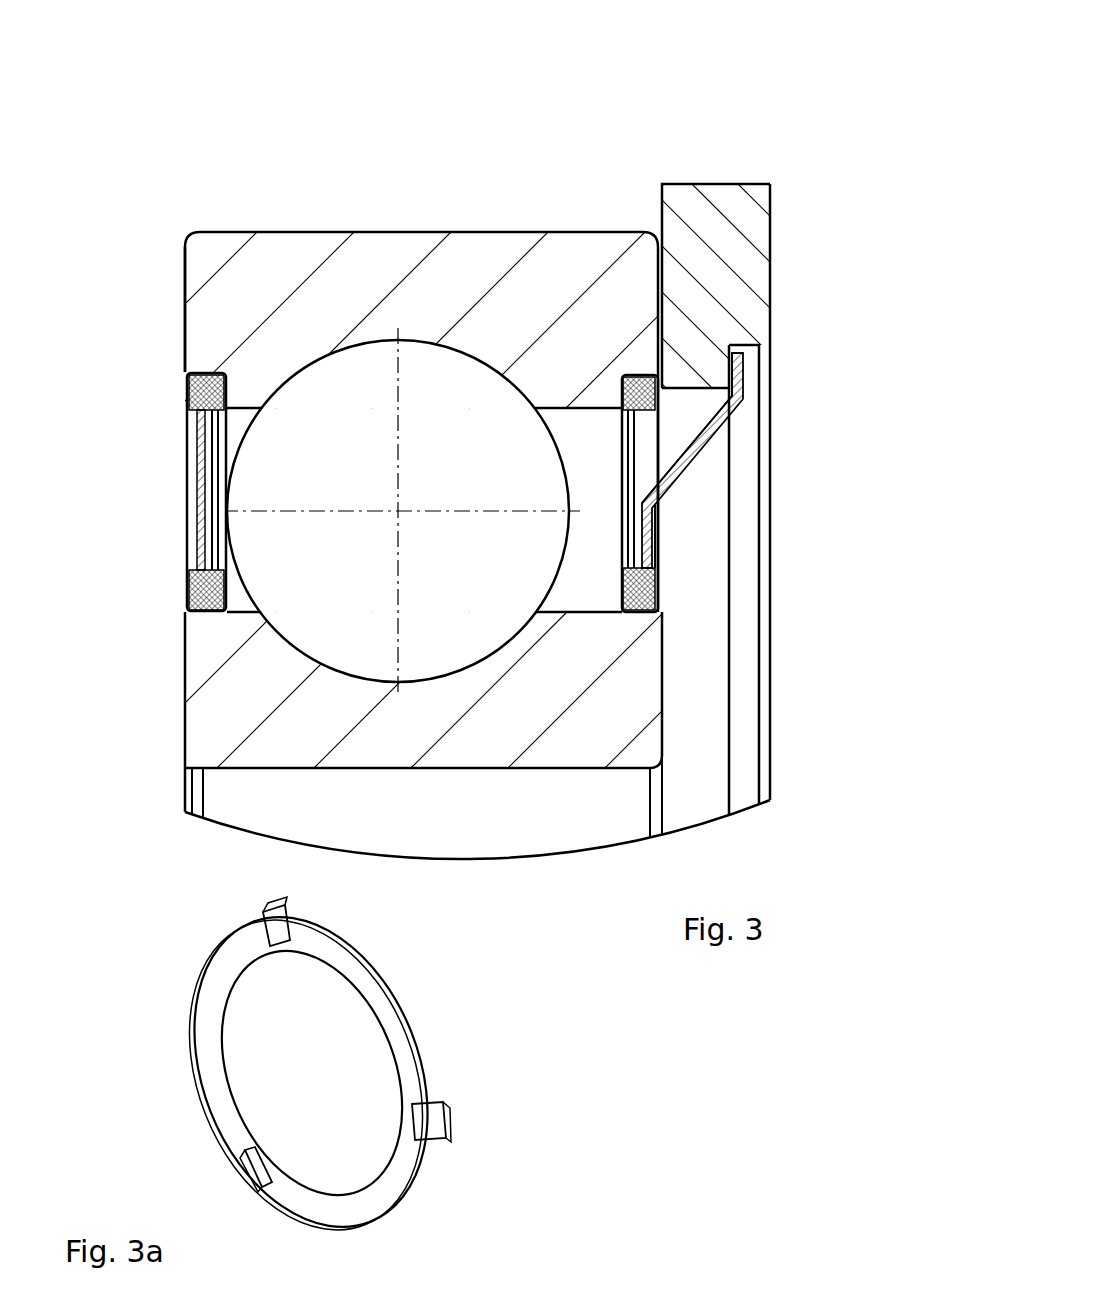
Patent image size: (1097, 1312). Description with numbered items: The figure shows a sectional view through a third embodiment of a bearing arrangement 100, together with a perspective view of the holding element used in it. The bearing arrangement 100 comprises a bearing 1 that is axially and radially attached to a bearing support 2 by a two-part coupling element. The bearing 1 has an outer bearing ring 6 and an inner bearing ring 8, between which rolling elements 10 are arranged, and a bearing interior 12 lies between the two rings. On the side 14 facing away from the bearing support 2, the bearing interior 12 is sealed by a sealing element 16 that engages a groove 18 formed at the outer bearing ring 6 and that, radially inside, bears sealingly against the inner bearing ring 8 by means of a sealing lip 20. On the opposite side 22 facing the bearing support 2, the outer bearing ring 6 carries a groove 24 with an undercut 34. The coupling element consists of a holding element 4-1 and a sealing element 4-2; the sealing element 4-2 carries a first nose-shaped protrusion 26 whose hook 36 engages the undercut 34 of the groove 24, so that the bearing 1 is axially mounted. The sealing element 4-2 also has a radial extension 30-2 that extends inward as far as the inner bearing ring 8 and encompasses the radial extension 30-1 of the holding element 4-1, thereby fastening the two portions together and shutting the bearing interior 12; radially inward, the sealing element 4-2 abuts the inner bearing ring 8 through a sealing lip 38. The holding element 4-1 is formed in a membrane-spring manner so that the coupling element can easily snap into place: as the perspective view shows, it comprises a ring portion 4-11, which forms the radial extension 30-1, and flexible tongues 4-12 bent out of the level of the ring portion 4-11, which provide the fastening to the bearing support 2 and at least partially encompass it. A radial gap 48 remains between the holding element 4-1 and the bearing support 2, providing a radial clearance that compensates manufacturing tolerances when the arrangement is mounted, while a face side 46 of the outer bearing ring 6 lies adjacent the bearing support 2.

In FIG. 3, the bearing arrangement 100 is at (402, 60).
In FIG. 3, the bearing 1 is at (503, 208).
In FIG. 3, the bearing support 2 is at (725, 205).
In FIG. 3, the outer bearing ring 6 is at (405, 242).
In FIG. 3, the inner bearing ring 8 is at (401, 766).
In FIG. 3, the rolling elements 10 is at (322, 626).
In FIG. 3, the bearing interior 12 is at (602, 466).
In FIG. 3, the side facing away from the bearing support 14 is at (122, 336).
In FIG. 3, the sealing element 16 is at (185, 505).
In FIG. 3, the groove 18 is at (190, 370).
In FIG. 3, the sealing lip 20 is at (190, 606).
In FIG. 3, the side facing the bearing support 22 is at (834, 297).
In FIG. 3, the groove 24 is at (628, 378).
In FIG. 3, the first nose-shaped protrusion 26 is at (625, 386).
In FIG. 3, the radial extension of the holding element 30-1 is at (664, 540).
In FIG. 3, the radial extension of the sealing element 30-2 is at (667, 452).
In FIG. 3, the undercut 34 is at (673, 403).
In FIG. 3, the hook 36 is at (650, 375).
In FIG. 3, the sealing lip 38 is at (655, 603).
In FIG. 3, the face side of the outer bearing ring 46 is at (757, 343).
In FIG. 3, the radial gap 48 is at (742, 400).
In FIG. 3, the holding element 4-1 is at (702, 402).
In FIG. 3A, the holding element 4-1 is at (258, 905).
In FIG. 3, the sealing element 4-2 is at (662, 568).
In FIG. 3A, the ring portion 4-11 is at (353, 1213).
In FIG. 3A, the flexible tongues 4-12 is at (450, 1122).